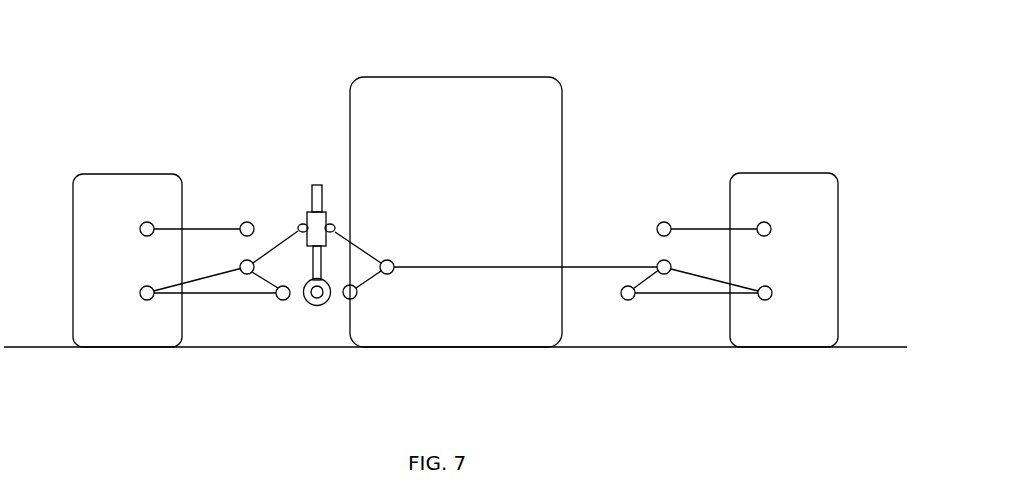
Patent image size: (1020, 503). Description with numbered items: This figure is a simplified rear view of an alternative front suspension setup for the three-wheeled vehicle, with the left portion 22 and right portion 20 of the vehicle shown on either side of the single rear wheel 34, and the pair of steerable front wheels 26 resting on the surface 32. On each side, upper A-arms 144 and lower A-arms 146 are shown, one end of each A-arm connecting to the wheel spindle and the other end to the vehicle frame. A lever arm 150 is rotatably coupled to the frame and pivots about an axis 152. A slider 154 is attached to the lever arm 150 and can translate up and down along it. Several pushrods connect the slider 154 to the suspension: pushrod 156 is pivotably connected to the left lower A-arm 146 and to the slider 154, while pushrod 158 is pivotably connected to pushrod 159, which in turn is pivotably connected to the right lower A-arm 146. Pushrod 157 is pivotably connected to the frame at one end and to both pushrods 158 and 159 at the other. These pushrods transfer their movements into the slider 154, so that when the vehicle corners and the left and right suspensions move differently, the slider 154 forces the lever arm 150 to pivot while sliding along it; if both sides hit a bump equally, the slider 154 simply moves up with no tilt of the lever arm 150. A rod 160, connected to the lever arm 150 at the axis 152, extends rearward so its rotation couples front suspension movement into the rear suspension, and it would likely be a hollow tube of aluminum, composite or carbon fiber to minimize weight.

The right portion 20 is at (808, 58).
The left portion 22 is at (116, 58).
The steerable front wheels 26 is at (441, 237).
The surface 32 is at (458, 324).
The rear wheel 34 is at (463, 190).
The upper A-arms 144 is at (443, 171).
The lower A-arms 146 is at (456, 325).
The lever arm 150 is at (351, 122).
The axis 152 is at (352, 323).
The slider 154 is at (254, 148).
The pushrod 156 is at (218, 174).
The pushrod 157 is at (402, 295).
The pushrod 158 is at (392, 226).
The pushrod 159 is at (525, 220).
The rod 160 is at (374, 343).